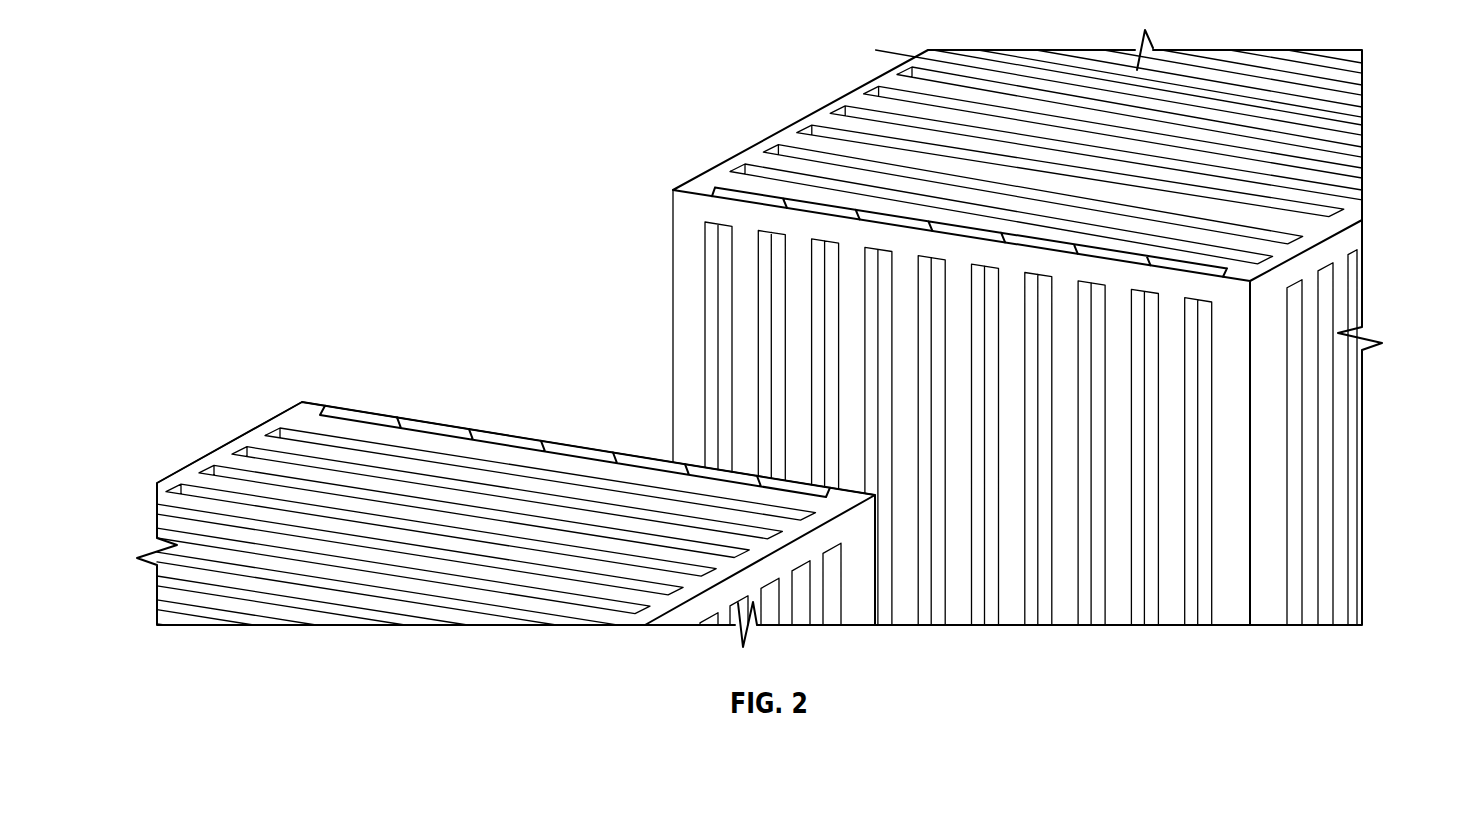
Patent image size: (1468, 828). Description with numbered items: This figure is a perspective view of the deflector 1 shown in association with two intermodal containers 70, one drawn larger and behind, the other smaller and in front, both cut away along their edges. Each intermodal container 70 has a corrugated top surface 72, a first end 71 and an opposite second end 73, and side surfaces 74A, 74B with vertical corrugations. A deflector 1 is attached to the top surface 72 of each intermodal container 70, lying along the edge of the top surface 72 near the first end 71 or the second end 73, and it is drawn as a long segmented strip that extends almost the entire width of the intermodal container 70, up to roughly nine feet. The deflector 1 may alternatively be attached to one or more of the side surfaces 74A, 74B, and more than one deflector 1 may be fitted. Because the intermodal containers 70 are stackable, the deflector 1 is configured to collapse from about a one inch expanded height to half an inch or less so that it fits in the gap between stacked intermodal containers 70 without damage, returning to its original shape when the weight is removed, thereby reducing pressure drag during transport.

The deflector 1 is at (735, 188).
The intermodal container 70 is at (1355, 383).
The first end 71 is at (1173, 318).
The top surface 72 is at (893, 118).
The second end 73 is at (327, 405).
The side surface 74A is at (1326, 452).
The side surface 74B is at (680, 258).